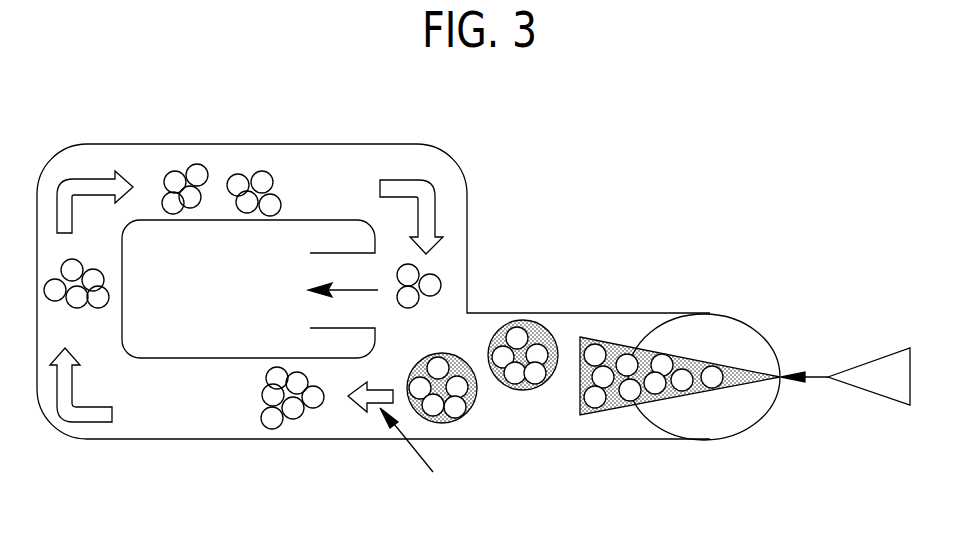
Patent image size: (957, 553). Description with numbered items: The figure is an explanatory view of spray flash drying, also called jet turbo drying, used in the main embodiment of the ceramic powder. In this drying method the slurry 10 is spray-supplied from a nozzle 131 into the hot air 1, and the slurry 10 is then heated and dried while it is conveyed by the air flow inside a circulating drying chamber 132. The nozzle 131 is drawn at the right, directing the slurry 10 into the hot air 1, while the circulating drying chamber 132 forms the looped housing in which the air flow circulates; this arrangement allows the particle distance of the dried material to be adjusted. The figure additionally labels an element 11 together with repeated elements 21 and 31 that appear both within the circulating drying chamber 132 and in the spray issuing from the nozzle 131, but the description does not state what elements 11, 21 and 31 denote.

The hot air 1 is at (414, 451).
The slurry 10 is at (817, 380).
The aggregate 11 is at (525, 393).
The particles 21 is at (517, 337).
The dispersion medium 31 is at (537, 330).
The nozzle 131 is at (887, 355).
The circulating drying chamber 132 is at (313, 142).